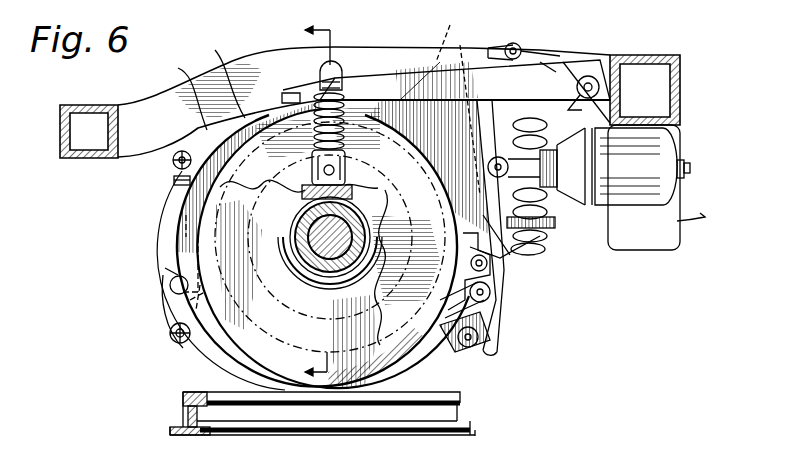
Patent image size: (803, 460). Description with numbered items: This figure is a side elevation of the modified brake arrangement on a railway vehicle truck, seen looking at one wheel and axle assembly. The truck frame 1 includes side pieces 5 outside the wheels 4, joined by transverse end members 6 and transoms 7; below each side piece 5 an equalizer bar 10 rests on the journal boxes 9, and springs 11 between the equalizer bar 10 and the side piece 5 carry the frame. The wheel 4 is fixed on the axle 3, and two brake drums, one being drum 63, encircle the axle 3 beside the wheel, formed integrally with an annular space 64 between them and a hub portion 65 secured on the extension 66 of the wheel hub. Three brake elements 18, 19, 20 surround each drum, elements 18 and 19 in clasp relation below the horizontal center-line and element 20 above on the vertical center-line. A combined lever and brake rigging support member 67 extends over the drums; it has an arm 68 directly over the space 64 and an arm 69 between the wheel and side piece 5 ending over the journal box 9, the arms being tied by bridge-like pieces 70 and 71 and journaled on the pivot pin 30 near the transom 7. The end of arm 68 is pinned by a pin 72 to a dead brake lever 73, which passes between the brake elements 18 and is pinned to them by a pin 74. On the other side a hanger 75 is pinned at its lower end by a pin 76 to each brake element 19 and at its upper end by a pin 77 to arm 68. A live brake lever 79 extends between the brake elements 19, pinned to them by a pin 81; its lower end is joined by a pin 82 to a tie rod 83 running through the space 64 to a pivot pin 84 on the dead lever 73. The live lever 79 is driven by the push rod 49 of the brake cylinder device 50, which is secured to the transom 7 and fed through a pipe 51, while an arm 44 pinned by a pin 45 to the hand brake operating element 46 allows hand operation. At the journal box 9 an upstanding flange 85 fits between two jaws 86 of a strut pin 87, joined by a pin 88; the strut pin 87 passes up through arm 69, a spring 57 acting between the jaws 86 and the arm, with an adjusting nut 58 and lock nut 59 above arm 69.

The truck frame 1 is at (643, 56).
The axle 3 is at (312, 238).
The wheel 4 is at (450, 386).
The side piece 5 is at (132, 105).
The end member 6 is at (60, 130).
The transom 7 is at (499, 202).
The journal box 9 is at (302, 192).
The equalizer bar 10 is at (622, 220).
The springs 11 is at (550, 195).
The brake element 18 is at (192, 307).
The brake element 19 is at (470, 315).
The brake element 20 is at (287, 97).
The pivot pin 30 is at (590, 75).
The arm 44 is at (543, 65).
The pin 45 is at (522, 52).
The operating element 46 is at (498, 44).
The push rod 49 is at (531, 179).
The brake cylinder device 50 is at (622, 212).
The pipe 51 is at (689, 166).
The spring 57 is at (342, 121).
The adjusting nut 58 is at (342, 86).
The lock nut 59 is at (343, 78).
The brake drum 63 is at (478, 327).
The annular space 64 is at (198, 237).
The hub portion 65 is at (376, 240).
The extension 66 is at (300, 220).
The combined lever and brake rigging support member 67 is at (217, 76).
The arm 68 is at (179, 93).
The arm 69 is at (410, 68).
The bridge-like piece 70 is at (453, 33).
The bridge-like piece 71 is at (556, 78).
The pin 72 is at (173, 159).
The dead brake lever 73 is at (174, 181).
The pin 74 is at (170, 285).
The hanger 75 is at (505, 250).
The pin 76 is at (488, 265).
The pin 77 is at (464, 110).
The live brake lever 79 is at (498, 194).
The pin 81 is at (492, 302).
The pin 82 is at (462, 350).
The tie rod 83 is at (213, 343).
The pivot pin 84 is at (170, 333).
The upstanding flange 85 is at (380, 188).
The jaws 86 is at (292, 190).
The strut pin 87 is at (334, 68).
The pin 88 is at (346, 170).